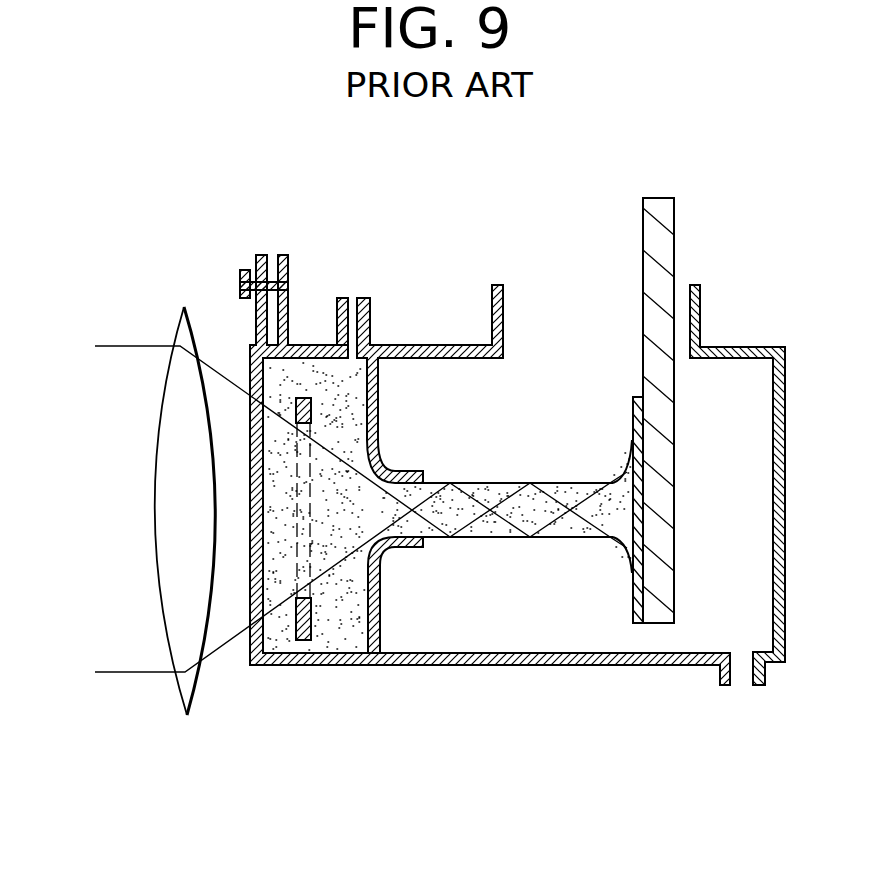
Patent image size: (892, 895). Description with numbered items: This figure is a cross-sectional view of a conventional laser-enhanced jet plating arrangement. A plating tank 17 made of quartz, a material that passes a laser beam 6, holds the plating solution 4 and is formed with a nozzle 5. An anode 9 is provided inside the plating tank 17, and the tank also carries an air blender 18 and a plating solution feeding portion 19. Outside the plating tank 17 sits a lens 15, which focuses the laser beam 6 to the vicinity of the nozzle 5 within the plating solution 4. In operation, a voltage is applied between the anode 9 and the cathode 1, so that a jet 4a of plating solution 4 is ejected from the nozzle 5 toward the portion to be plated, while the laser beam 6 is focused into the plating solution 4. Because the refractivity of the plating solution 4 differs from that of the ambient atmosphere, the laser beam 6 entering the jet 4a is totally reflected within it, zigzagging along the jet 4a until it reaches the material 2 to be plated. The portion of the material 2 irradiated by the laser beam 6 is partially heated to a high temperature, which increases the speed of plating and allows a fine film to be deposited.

The cathode 1 is at (674, 224).
The material to be plated 2 is at (633, 395).
The plating solution 4 is at (362, 607).
The jet 4a is at (597, 538).
The nozzle 5 is at (404, 471).
The laser beam 6 is at (122, 346).
The anode 9 is at (311, 640).
The lens 15 is at (183, 690).
The plating tank 17 is at (283, 667).
The air blender 18 is at (269, 258).
The plating solution feeding portion 19 is at (354, 297).